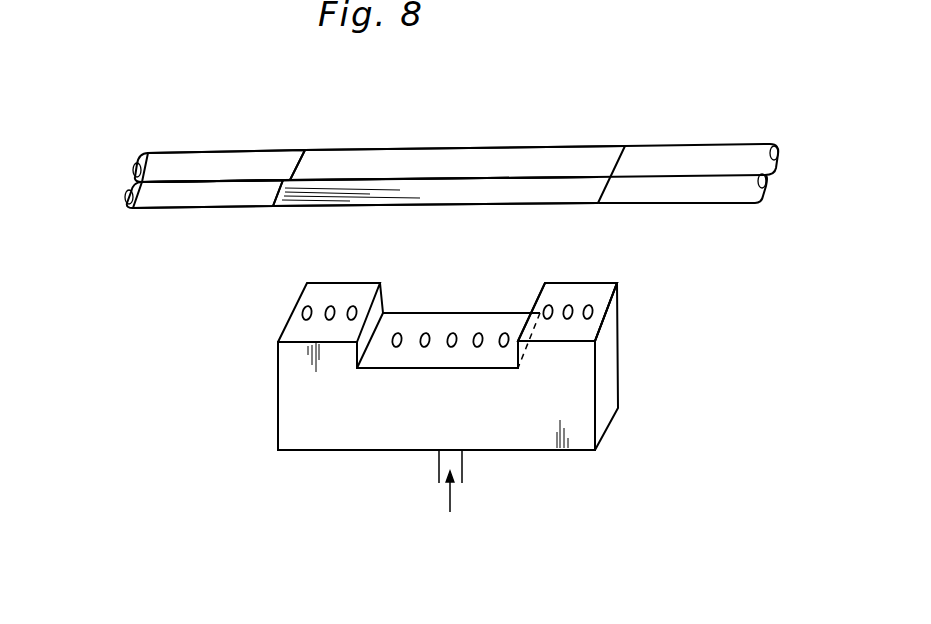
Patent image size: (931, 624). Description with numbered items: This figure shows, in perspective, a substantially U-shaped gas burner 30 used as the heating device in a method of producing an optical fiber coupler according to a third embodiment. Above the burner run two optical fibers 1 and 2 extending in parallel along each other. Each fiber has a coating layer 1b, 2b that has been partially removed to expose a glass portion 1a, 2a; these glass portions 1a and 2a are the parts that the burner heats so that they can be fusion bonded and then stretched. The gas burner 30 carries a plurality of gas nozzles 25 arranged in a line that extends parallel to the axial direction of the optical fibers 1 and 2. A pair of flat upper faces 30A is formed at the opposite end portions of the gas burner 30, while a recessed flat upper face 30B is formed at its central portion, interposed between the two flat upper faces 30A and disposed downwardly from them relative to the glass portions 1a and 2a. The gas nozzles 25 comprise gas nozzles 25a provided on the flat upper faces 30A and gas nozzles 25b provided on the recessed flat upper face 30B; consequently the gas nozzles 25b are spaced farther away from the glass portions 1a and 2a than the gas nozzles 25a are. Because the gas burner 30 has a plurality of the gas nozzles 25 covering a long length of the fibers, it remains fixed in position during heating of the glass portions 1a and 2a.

The optical fiber 1 is at (672, 140).
The glass portion 1a is at (513, 158).
The coating layer 1b is at (227, 162).
The optical fiber 2 is at (673, 207).
The glass portion 2a is at (450, 188).
The coating layer 2b is at (212, 196).
The gas nozzles 25 is at (578, 298).
The gas nozzles 25a is at (304, 314).
The gas nozzles 25b is at (452, 334).
The gas burner 30 is at (626, 381).
The flat upper faces 30A is at (328, 292).
The recessed flat upper face 30B is at (493, 368).